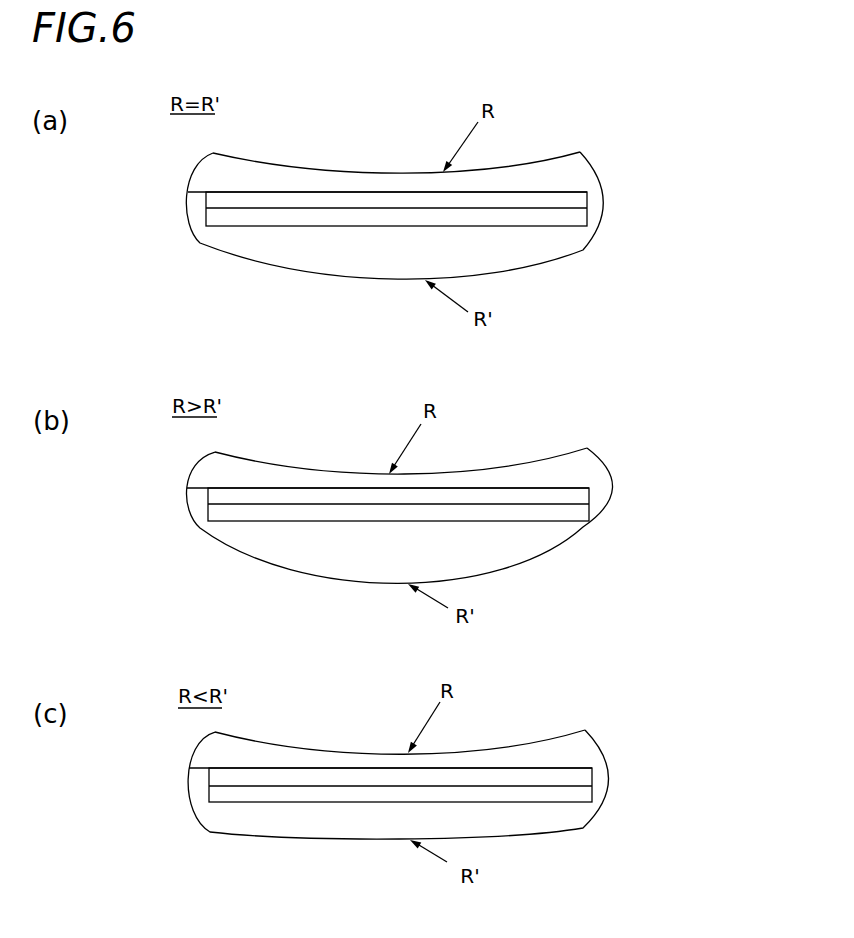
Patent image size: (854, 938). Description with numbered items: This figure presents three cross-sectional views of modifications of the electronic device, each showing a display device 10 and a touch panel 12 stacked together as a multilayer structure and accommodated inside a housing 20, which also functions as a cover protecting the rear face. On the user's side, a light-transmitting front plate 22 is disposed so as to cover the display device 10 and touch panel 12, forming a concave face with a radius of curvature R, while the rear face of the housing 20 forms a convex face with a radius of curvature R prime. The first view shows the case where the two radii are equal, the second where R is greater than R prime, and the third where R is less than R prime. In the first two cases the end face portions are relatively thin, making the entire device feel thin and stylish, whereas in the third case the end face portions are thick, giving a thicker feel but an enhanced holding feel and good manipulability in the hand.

The display device 10 is at (583, 212).
The touch panel 12 is at (583, 190).
The housing 20 is at (583, 237).
The front plate 22 is at (583, 161).